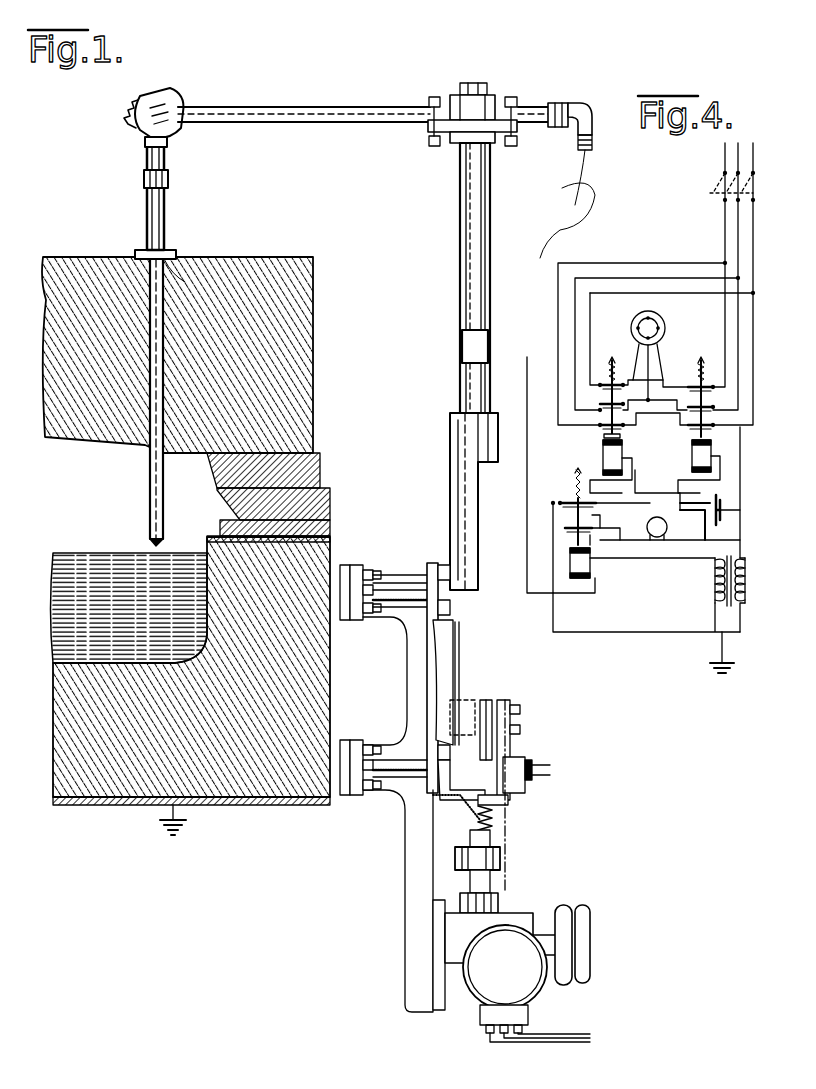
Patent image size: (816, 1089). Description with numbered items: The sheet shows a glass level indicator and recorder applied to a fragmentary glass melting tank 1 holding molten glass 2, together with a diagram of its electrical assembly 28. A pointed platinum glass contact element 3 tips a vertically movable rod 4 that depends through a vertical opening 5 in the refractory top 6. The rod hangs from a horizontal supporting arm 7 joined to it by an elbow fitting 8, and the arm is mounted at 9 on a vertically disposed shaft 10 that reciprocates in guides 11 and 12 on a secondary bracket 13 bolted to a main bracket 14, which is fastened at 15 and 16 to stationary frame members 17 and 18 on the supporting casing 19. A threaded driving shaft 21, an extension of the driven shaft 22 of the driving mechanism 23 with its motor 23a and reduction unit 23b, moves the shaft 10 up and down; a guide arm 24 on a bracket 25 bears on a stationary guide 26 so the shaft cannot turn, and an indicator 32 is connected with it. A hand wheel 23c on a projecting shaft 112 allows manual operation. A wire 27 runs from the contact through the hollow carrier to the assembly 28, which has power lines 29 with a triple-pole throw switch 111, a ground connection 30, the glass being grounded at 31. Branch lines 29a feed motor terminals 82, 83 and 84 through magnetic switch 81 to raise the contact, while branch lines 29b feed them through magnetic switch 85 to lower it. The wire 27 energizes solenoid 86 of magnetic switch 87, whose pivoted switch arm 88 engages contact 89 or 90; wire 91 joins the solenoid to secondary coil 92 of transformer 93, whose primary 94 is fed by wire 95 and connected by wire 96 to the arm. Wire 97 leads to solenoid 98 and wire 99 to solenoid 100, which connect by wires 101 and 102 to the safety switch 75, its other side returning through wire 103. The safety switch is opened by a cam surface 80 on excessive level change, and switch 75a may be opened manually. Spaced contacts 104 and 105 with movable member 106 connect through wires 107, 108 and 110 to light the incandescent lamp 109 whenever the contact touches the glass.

In FIG. 1, the glass melting tank 1 is at (316, 389).
In FIG. 1, the molten glass 2 is at (85, 552).
In FIG. 1, the glass contact element 3 is at (164, 545).
In FIG. 1, the vertically movable rod 4 is at (162, 510).
In FIG. 1, the vertical opening 5 is at (180, 278).
In FIG. 1, the refractory top 6 is at (220, 257).
In FIG. 1, the horizontal supporting arm 7 is at (286, 106).
In FIG. 1, the elbow fitting 8 is at (172, 104).
In FIG. 1, the mounting 9 is at (450, 130).
In FIG. 1, the vertically disposed shaft 10 is at (490, 228).
In FIG. 1, the guide or bearing 11 is at (500, 437).
In FIG. 1, the guide or bearing 12 is at (505, 804).
In FIG. 1, the secondary bracket 13 is at (443, 740).
In FIG. 1, the main bracket 14 is at (405, 652).
In FIG. 1, the fastening 15 is at (378, 572).
In FIG. 1, the fastening 16 is at (365, 741).
In FIG. 1, the stationary frame member 17 is at (345, 610).
In FIG. 1, the stationary frame member 18 is at (340, 740).
In FIG. 1, the supporting casing 19 is at (325, 685).
In FIG. 1, the threaded driving shaft 21 is at (495, 824).
In FIG. 1, the driven shaft 22 is at (490, 880).
In FIG. 1, the driving mechanism 23 is at (545, 995).
In FIG. 1, the motor 23a is at (478, 995).
In FIG. 4, the motor 23a is at (651, 314).
In FIG. 1, the reduction unit 23b is at (525, 915).
In FIG. 1, the hand wheel 23c is at (592, 915).
In FIG. 1, the guide arm 24 is at (487, 698).
In FIG. 1, the bracket 25 is at (505, 700).
In FIG. 1, the stationary guide 26 is at (480, 780).
In FIG. 1, the wire 27 is at (580, 180).
In FIG. 4, the wire 27 is at (528, 452).
In FIG. 4, the electrical assembly 28 is at (566, 220).
In FIG. 4, the power lines 29 is at (751, 155).
In FIG. 4, the branch lines 29a is at (753, 315).
In FIG. 4, the branch lines 29b is at (558, 312).
In FIG. 4, the ground connection 30 is at (720, 649).
In FIG. 1, the ground connection 31 is at (180, 821).
In FIG. 1, the indicator 32 is at (510, 872).
In FIG. 1, the safety switch 75 is at (520, 760).
In FIG. 4, the safety switch 75 is at (709, 523).
In FIG. 4, the normally closed switch 75a is at (553, 512).
In FIG. 1, the lower cam surface 80 is at (515, 797).
In FIG. 4, the magnetic switch 81 is at (682, 440).
In FIG. 4, the motor terminal 82 is at (637, 345).
In FIG. 4, the motor terminal 83 is at (656, 348).
In FIG. 4, the motor terminal 84 is at (662, 335).
In FIG. 4, the magnetic switch 85 is at (596, 440).
In FIG. 4, the solenoid 86 is at (592, 572).
In FIG. 4, the magnetic switch 87 is at (578, 546).
In FIG. 4, the pivoted switch arm 88 is at (605, 518).
In FIG. 4, the switch contact 89 is at (600, 509).
In FIG. 4, the switch contact 90 is at (588, 493).
In FIG. 4, the wire 91 is at (652, 560).
In FIG. 4, the secondary coil 92 is at (712, 596).
In FIG. 4, the transformer 93 is at (709, 581).
In FIG. 4, the primary coil 94 is at (746, 572).
In FIG. 4, the wire 95 is at (742, 478).
In FIG. 4, the wire 96 is at (608, 634).
In FIG. 4, the wire 97 is at (695, 512).
In FIG. 4, the solenoid 98 is at (711, 450).
In FIG. 4, the wire 99 is at (591, 472).
In FIG. 4, the solenoid 100 is at (603, 459).
In FIG. 4, the wire 101 is at (726, 465).
In FIG. 4, the wire 102 is at (640, 493).
In FIG. 4, the wire 103 is at (716, 532).
In FIG. 4, the contact 104 is at (571, 515).
In FIG. 4, the contact 105 is at (617, 532).
In FIG. 4, the movable switch member 106 is at (590, 540).
In FIG. 4, the wire 107 is at (560, 528).
In FIG. 4, the wire 108 is at (620, 540).
In FIG. 4, the incandescent lamp 109 is at (647, 524).
In FIG. 4, the wire 110 is at (675, 543).
In FIG. 4, the triple-pole throw switch 111 is at (751, 203).
In FIG. 1, the projecting shaft 112 is at (552, 930).